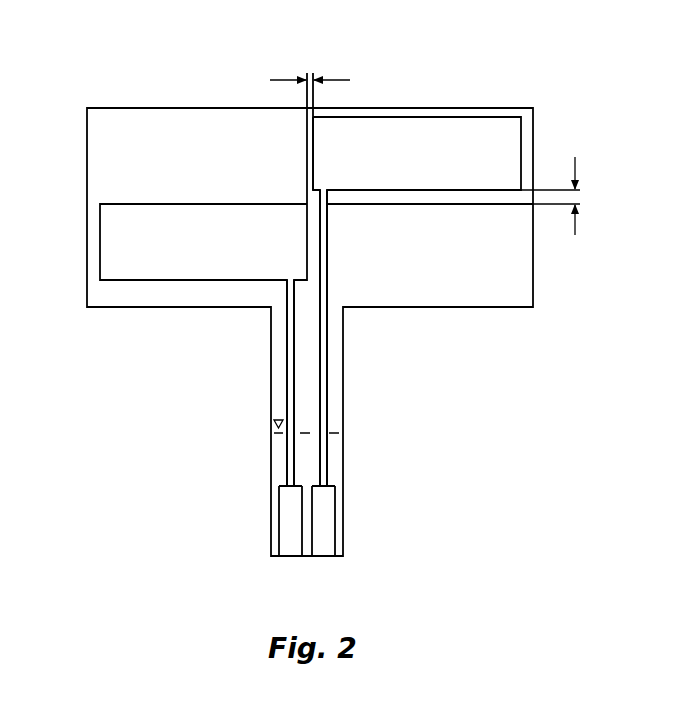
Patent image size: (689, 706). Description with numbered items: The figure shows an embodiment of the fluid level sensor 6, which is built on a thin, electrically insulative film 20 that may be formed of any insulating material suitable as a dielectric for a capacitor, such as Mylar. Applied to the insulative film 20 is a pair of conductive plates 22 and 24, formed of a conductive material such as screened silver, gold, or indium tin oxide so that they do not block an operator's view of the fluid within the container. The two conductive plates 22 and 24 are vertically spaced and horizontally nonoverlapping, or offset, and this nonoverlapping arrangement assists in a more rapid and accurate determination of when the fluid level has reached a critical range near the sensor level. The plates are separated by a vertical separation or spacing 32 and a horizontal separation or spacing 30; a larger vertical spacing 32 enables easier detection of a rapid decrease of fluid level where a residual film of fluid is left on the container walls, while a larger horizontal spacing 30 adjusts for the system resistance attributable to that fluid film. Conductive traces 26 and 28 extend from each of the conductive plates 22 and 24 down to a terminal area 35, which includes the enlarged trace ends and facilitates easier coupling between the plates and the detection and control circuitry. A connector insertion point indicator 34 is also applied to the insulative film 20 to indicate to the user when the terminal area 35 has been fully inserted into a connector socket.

The fluid level sensor 6 is at (510, 72).
The thin, electrically insulative film 20 is at (516, 275).
The conductive plate 22 is at (507, 133).
The conductive plate 24 is at (112, 243).
The conductive trace 26 is at (327, 373).
The conductive trace 28 is at (288, 400).
The horizontal separation or spacing 30 is at (338, 80).
The vertical separation or spacing 32 is at (575, 225).
The connector insertion point indicator 34 is at (280, 437).
The terminal area 35 is at (343, 563).